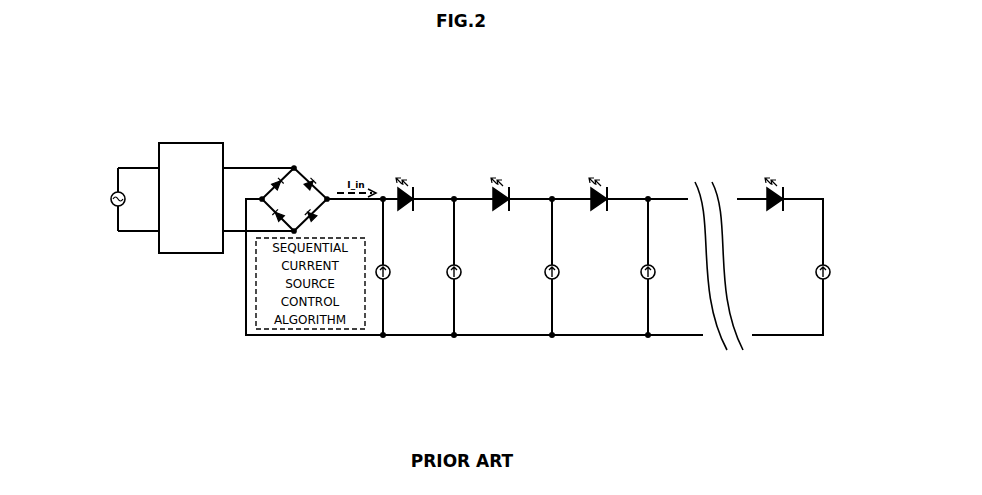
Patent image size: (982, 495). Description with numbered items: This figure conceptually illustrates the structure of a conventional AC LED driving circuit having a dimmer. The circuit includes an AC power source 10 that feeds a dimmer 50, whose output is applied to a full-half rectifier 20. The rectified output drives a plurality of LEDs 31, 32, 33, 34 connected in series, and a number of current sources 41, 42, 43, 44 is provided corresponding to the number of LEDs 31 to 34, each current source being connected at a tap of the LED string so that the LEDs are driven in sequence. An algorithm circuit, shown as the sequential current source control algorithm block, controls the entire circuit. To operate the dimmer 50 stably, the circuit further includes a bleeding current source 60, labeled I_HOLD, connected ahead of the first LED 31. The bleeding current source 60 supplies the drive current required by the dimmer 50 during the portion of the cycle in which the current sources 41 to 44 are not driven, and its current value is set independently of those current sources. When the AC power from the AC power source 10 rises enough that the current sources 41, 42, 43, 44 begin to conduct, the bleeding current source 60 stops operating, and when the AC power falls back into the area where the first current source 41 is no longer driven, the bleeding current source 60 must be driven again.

The AC power source 10 is at (111, 203).
The full-half rectifier 20 is at (303, 165).
The LED 31 is at (414, 192).
The LED 32 is at (510, 192).
The LED 33 is at (608, 195).
The LED 34 is at (784, 195).
The current source 41 is at (457, 278).
The current source 42 is at (555, 278).
The current source 43 is at (651, 278).
The current source 44 is at (828, 278).
The dimmer 50 is at (190, 142).
The bleeding current source 60 is at (385, 278).